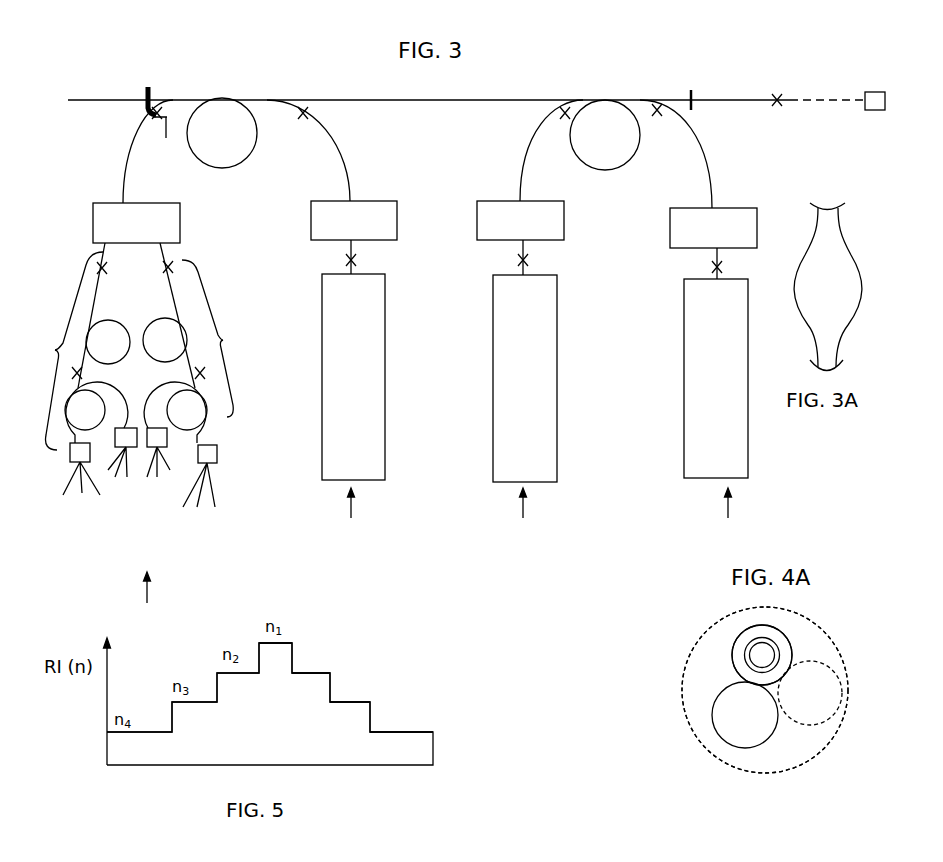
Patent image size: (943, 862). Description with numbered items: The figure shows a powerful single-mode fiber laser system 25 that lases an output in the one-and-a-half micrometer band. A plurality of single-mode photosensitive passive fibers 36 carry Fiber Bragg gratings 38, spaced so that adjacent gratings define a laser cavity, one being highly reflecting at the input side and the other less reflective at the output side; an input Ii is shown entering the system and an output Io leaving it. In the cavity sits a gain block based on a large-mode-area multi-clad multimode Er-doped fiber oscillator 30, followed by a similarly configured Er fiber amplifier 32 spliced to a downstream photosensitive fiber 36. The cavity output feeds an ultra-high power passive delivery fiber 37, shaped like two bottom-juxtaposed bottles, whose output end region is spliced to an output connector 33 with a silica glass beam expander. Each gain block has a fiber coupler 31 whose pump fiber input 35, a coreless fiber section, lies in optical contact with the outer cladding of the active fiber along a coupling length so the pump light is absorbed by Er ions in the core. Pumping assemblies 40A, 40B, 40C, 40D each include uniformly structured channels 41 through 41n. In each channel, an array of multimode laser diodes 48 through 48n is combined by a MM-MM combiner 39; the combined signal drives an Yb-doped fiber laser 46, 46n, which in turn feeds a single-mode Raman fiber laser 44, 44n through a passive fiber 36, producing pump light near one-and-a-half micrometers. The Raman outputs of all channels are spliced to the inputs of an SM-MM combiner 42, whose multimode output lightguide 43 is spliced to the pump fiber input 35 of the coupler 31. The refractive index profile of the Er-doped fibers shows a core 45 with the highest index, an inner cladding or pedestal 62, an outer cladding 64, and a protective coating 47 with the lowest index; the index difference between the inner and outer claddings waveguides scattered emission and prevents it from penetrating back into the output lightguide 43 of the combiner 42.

In FIG. 3, the fiber laser system 25 is at (654, 56).
In FIG. 3, the Er-doped fiber oscillator 30 is at (222, 133).
In FIG. 4A, the Er-doped fiber oscillator 30 is at (735, 640).
In FIG. 5, the Er-doped fiber oscillator 30 is at (392, 630).
In FIG. 3, the fiber coupler 31 is at (200, 98).
In FIG. 4A, the fiber coupler 31 is at (788, 790).
In FIG. 3, the Er fiber amplifier 32 is at (605, 135).
In FIG. 4A, the Er fiber amplifier 32 is at (762, 655).
In FIG. 5, the Er fiber amplifier 32 is at (270, 687).
In FIG. 3, the output connector 33 is at (873, 108).
In FIG. 3, the pump fiber input 35 is at (166, 134).
In FIG. 4A, the pump fiber input 35 is at (820, 692).
In FIG. 3, the SM photosensitive passive fiber 36 is at (83, 98).
In FIG. 3, the passive delivery fiber 37 is at (545, 97).
In FIG. 3A, the passive delivery fiber 37 is at (840, 255).
In FIG. 3, the Fiber Bragg grating 38 is at (152, 97).
In FIG. 3, the MM-MM combiner 39 is at (152, 430).
In FIG. 4A, the MM-MM combiner 39 is at (813, 748).
In FIG. 3, the pumping assembly 40A is at (167, 588).
In FIG. 3, the pumping assembly 40B is at (350, 519).
In FIG. 3, the pumping assembly 40C is at (519, 519).
In FIG. 3, the pumping assembly 40D is at (724, 519).
In FIG. 3, the channel 41 is at (386, 361).
In FIG. 3, the channel 41n is at (213, 330).
In FIG. 3, the SM-MM combiner 42 is at (98, 220).
In FIG. 3, the MM output lightguide 43 is at (128, 172).
In FIG. 3, the SM Raman fiber laser 44 is at (108, 342).
In FIG. 3, the SM Raman fiber laser 44n is at (165, 340).
In FIG. 5, the core 45 is at (283, 660).
In FIG. 3, the Yb-doped fiber laser 46 is at (96, 412).
In FIG. 3, the Yb-doped fiber laser 46n is at (175, 412).
In FIG. 5, the protective coating 47 is at (420, 753).
In FIG. 3, the MM laser diode 48 is at (93, 480).
In FIG. 3, the MM laser diode 48n is at (200, 476).
In FIG. 5, the inner cladding 62 is at (315, 690).
In FIG. 5, the outer cladding 64 is at (355, 722).
In FIG. 3, the input light Ii is at (124, 533).
In FIG. 3, the output light Io is at (823, 64).